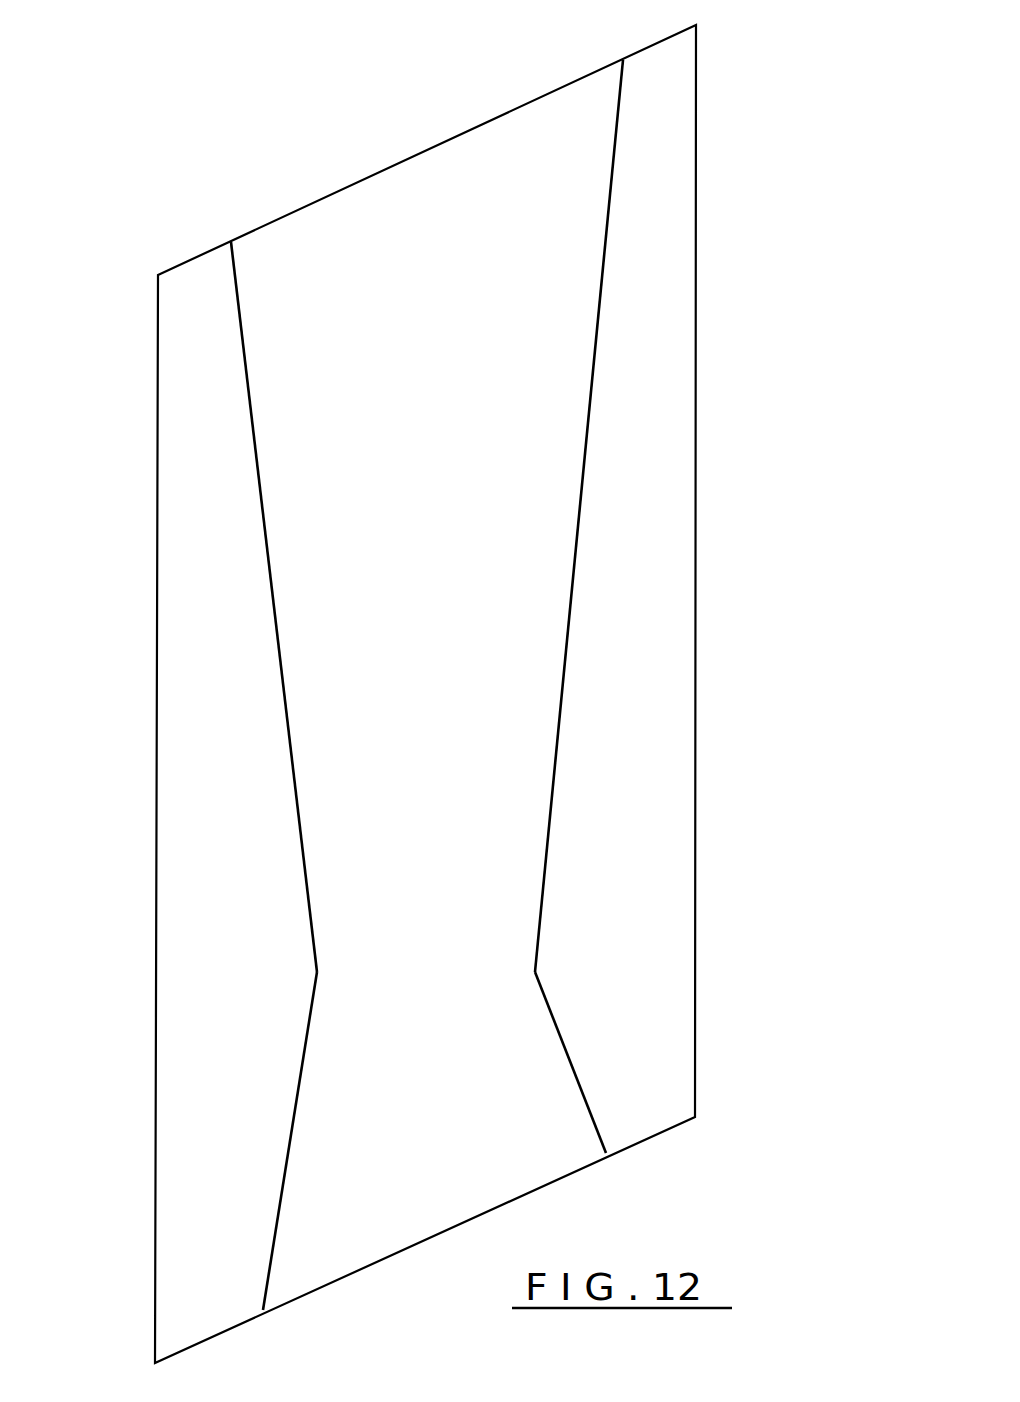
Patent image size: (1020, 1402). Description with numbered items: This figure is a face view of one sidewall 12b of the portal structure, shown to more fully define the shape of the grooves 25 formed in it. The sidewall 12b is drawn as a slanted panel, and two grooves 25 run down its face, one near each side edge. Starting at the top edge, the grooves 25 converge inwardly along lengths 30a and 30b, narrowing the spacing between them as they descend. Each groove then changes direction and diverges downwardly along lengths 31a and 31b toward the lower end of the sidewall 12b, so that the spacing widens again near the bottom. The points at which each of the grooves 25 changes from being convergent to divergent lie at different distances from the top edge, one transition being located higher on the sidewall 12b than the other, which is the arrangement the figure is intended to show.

The sidewall 12b is at (668, 197).
The length 30a is at (248, 412).
The length 30b is at (593, 367).
The grooves 25 is at (272, 610).
The length 31a is at (298, 1085).
The length 31b is at (563, 1040).